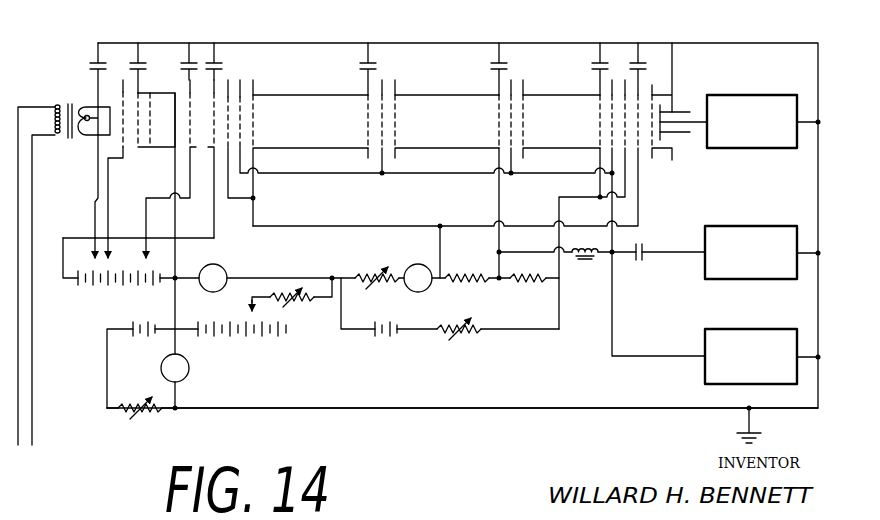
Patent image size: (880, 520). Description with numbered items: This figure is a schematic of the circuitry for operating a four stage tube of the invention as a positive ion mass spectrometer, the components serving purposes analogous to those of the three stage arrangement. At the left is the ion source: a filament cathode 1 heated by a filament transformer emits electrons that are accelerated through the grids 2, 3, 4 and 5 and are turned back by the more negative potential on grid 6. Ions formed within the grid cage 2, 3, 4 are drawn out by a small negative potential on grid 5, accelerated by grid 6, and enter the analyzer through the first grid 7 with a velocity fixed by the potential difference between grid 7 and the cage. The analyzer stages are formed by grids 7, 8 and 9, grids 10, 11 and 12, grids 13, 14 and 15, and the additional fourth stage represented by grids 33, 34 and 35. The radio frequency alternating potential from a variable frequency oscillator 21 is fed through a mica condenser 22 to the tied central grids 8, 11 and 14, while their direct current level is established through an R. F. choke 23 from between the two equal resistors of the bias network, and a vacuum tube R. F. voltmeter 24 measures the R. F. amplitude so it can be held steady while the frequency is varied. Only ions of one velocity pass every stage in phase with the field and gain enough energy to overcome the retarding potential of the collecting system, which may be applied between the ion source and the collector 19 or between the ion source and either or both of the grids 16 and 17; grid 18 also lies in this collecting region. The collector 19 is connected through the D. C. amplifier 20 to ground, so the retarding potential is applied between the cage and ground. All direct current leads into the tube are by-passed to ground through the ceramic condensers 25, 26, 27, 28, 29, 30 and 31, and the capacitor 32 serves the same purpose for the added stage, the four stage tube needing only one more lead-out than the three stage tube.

The cathode 1 is at (114, 81).
The grid 2 is at (127, 90).
The grid 3 is at (152, 82).
The grid 4 is at (173, 98).
The grid 5 is at (191, 93).
The grid 6 is at (212, 98).
The first grid of the analyzer 7 is at (230, 80).
The central grid of first analyzer stage 8 is at (242, 82).
The grid of first analyzer stage 9 is at (258, 84).
The grid of second analyzer stage 10 is at (368, 93).
The central grid of second analyzer stage 11 is at (387, 83).
The grid of second analyzer stage 12 is at (397, 86).
The grid of third analyzer stage 13 is at (600, 95).
The central grid of third analyzer stage 14 is at (612, 97).
The grid of third analyzer stage 15 is at (625, 92).
The grid 16 is at (641, 80).
The grid 17 is at (652, 91).
The collector electrode 18 is at (661, 104).
The collector 19 is at (668, 111).
The D. C. amplifier 20 is at (749, 95).
The variable frequency oscillator 21 is at (746, 226).
The mica condenser 22 is at (648, 245).
The R. F. choke 23 is at (588, 258).
The vacuum tube R. F. voltmeter 24 is at (746, 329).
The ceramic condenser 25 is at (104, 56).
The ceramic condenser 26 is at (141, 58).
The ceramic condenser 27 is at (192, 55).
The ceramic condenser 28 is at (219, 54).
The ceramic condenser 29 is at (373, 57).
The ceramic condenser 30 is at (603, 55).
The ceramic condenser 31 is at (641, 62).
The capacitor 32 is at (503, 58).
The grid of additional analyzer stage 33 is at (498, 95).
The grid of additional analyzer stage 34 is at (511, 97).
The grid of additional analyzer stage 35 is at (525, 96).